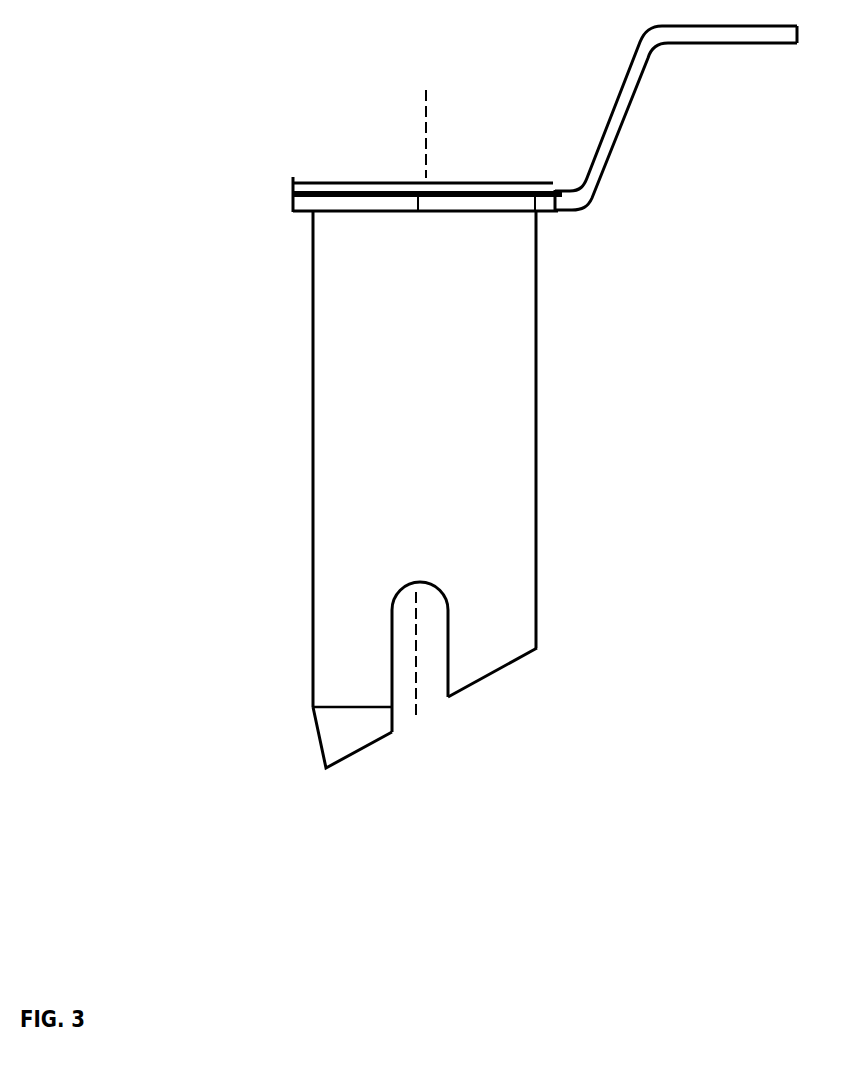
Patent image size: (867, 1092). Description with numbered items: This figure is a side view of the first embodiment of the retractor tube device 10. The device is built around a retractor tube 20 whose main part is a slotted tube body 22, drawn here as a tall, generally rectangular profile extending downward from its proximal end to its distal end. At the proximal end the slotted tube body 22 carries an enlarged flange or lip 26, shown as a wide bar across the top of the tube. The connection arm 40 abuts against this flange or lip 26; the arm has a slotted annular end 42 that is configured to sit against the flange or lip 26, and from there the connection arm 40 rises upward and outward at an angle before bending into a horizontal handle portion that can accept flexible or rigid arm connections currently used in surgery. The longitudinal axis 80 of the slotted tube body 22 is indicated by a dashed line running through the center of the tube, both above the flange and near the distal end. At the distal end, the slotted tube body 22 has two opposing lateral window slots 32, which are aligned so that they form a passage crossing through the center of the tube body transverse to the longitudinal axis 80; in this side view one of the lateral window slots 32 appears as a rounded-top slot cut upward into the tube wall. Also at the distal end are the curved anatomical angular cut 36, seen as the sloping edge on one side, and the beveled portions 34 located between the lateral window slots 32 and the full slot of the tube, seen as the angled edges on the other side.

The retractor tube device 10 is at (265, 80).
The retractor tube 20 is at (290, 371).
The slotted tube body 22 is at (332, 539).
The flange or lip 26 is at (287, 205).
The lateral window slots 32 is at (433, 695).
The beveled portions 34 is at (333, 742).
The curved anatomical angular cut 36 is at (497, 673).
The connection arm 40 is at (637, 131).
The slotted annular end 42 is at (505, 203).
The longitudinal axis 80 is at (425, 404).